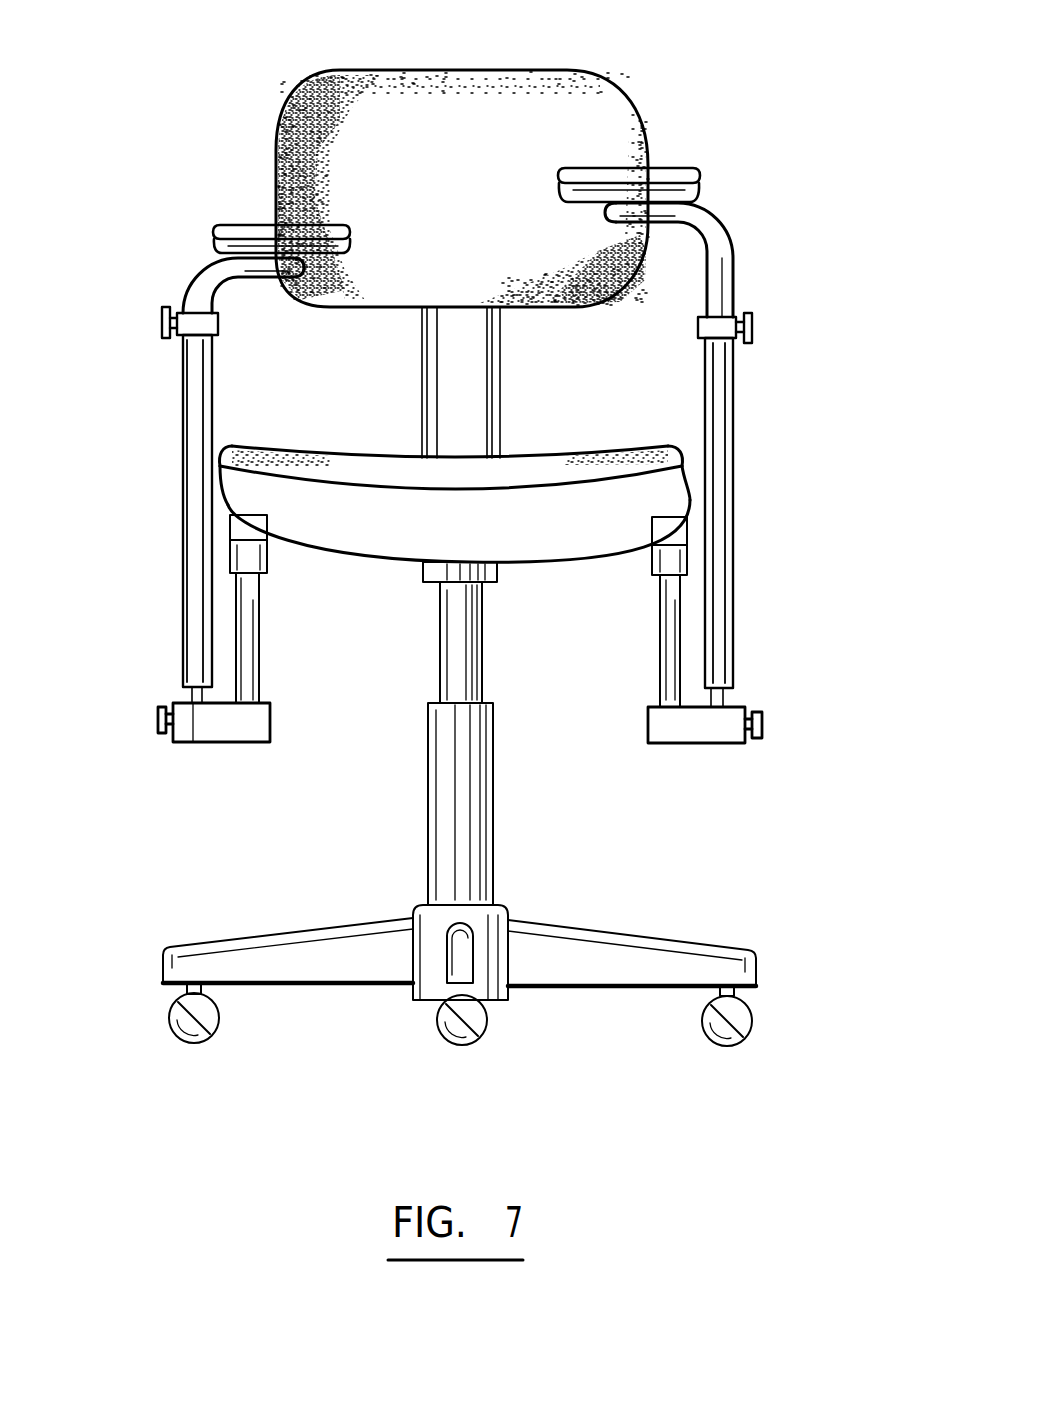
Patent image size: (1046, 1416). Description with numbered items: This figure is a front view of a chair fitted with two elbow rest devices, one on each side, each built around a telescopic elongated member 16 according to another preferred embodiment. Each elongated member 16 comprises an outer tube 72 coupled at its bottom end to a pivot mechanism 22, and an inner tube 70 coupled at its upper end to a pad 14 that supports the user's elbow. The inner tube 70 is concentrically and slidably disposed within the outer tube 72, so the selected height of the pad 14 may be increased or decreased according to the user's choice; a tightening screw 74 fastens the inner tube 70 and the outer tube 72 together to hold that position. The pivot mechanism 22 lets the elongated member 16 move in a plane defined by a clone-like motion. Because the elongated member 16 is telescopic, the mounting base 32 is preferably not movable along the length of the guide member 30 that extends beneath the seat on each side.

The pad 14 is at (246, 225).
The elongated member 16 is at (145, 428).
The pivot mechanism 22 is at (190, 692).
The guide member 30 is at (258, 651).
The mounting base 32 is at (240, 733).
The inner tube 70 is at (200, 283).
The outer tube 72 is at (192, 548).
The tightening screw 74 is at (218, 325).